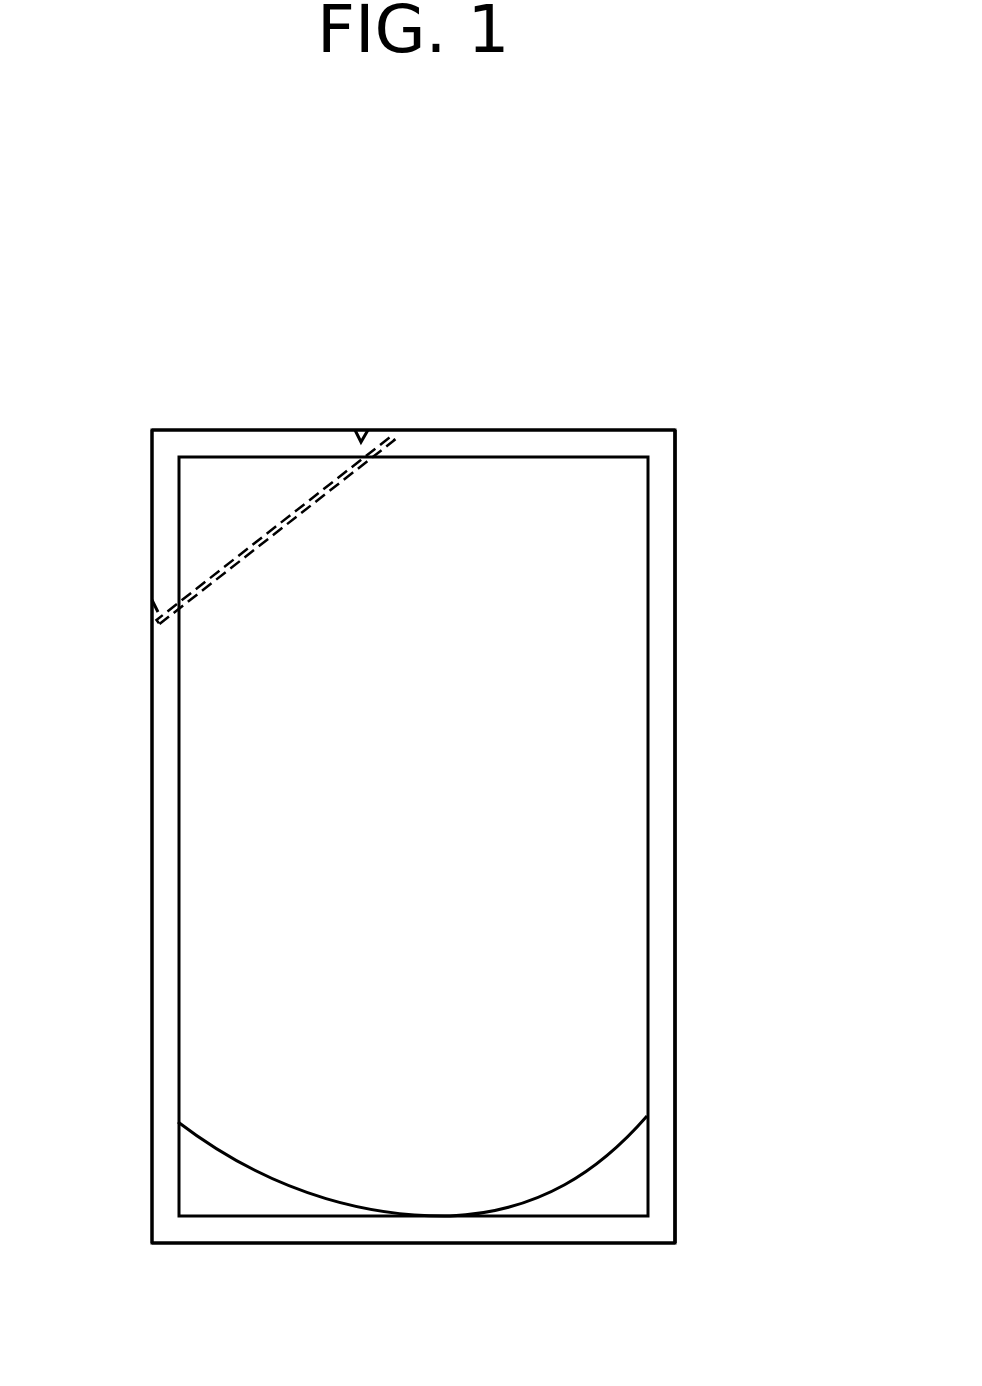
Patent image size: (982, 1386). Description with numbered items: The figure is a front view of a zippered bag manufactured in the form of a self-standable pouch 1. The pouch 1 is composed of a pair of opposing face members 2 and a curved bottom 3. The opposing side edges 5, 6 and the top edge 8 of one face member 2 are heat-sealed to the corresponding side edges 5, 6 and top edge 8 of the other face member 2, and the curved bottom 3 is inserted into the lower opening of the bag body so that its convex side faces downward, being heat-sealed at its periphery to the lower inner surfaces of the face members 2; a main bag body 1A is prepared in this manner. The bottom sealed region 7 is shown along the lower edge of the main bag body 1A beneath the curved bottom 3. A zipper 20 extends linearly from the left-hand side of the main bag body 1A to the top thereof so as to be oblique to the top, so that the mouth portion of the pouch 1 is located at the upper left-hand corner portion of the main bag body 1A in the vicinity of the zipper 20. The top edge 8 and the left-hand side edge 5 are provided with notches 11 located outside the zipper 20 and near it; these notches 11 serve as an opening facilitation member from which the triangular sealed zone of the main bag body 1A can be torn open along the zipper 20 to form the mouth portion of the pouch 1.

The self-standable pouch 1 is at (101, 354).
The main bag body 1A is at (682, 604).
The face member 2 is at (345, 760).
The curved bottom 3 is at (243, 1168).
The left-hand side edge 5 is at (153, 934).
The right-hand side edge 6 is at (675, 724).
The bottom seal portion 7 is at (535, 1231).
The top edge 8 is at (565, 429).
The notch 11 is at (361, 441).
The zipper 20 is at (312, 508).